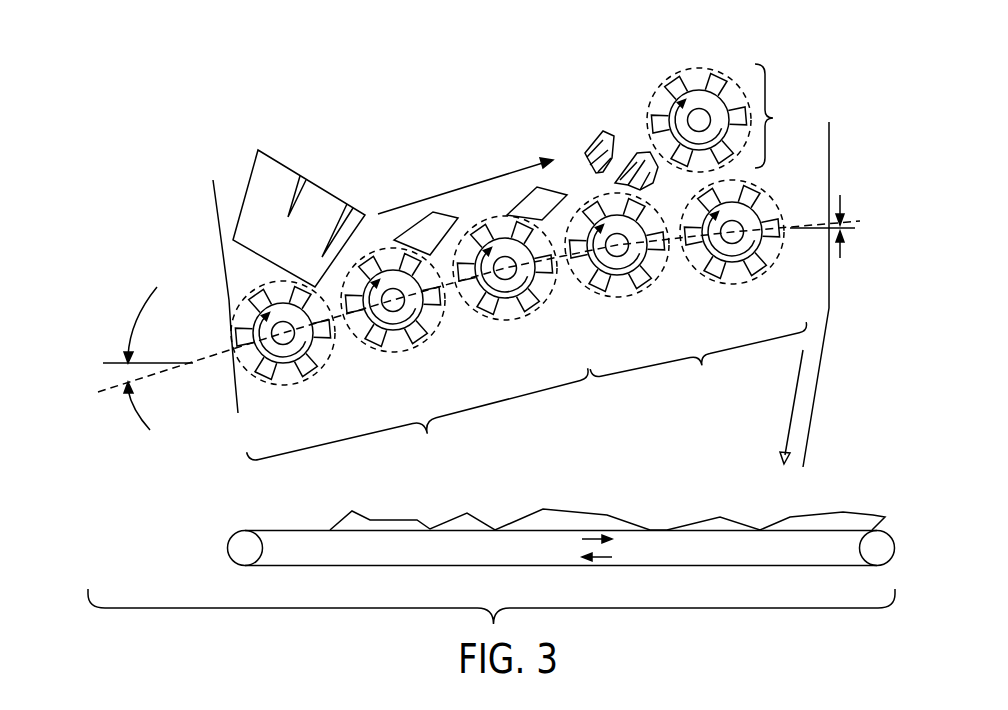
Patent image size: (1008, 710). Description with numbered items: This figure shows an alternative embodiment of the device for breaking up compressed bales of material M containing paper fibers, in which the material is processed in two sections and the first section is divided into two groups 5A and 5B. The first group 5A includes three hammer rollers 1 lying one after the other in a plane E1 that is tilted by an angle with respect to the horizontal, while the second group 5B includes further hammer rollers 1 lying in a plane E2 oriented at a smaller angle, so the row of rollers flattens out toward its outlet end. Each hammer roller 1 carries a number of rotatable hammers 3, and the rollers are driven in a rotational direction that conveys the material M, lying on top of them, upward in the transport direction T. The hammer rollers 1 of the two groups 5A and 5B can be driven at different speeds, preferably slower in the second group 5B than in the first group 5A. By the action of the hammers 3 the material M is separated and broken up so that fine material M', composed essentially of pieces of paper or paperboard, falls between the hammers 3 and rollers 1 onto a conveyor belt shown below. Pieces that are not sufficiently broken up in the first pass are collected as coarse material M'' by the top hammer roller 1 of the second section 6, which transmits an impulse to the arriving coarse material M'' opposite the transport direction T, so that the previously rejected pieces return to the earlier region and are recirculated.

The hammer roller 1 is at (295, 402).
The hammer 3 is at (377, 348).
The second section 6 is at (775, 116).
The first group 5A is at (417, 416).
The second group 5B is at (698, 359).
The material M is at (299, 216).
The fine material M' is at (607, 497).
The coarse material M'' is at (676, 286).
The transport direction T is at (488, 178).
The plane E1 is at (217, 356).
The plane E2 is at (815, 225).